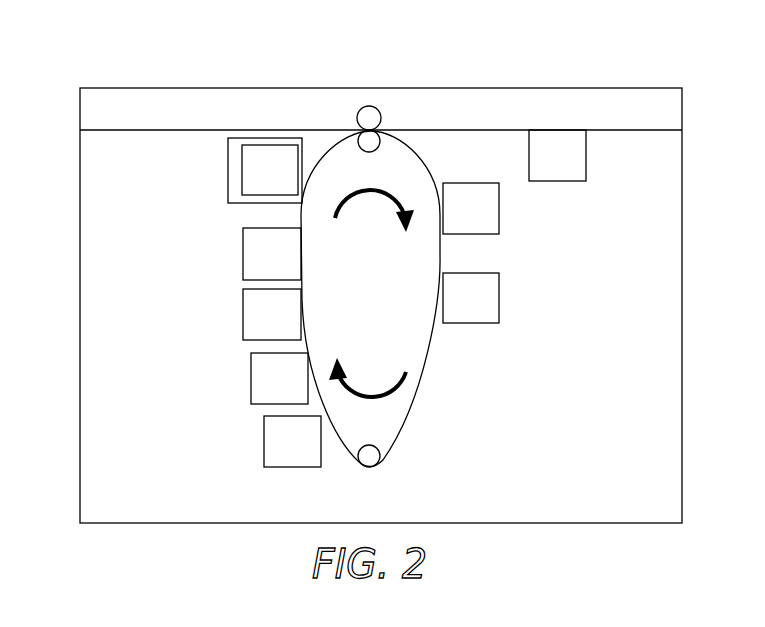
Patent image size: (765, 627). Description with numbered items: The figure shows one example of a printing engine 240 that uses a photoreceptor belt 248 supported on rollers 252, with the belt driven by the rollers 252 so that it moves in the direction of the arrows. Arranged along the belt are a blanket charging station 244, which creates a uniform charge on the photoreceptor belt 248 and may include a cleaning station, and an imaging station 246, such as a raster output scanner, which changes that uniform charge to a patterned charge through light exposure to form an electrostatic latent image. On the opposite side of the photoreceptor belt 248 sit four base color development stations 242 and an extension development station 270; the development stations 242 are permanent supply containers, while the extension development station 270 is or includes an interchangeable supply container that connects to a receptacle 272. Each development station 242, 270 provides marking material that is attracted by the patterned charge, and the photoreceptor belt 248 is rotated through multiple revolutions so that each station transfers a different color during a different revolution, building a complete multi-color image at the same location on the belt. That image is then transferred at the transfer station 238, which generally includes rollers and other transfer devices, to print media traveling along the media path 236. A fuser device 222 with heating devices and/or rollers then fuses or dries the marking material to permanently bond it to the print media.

The fuser device 222 is at (586, 160).
The media path 236 is at (166, 133).
The transfer station 238 is at (354, 124).
The printing engine 240 is at (80, 292).
The development stations 242 is at (243, 253).
The blanket charging station 244 is at (499, 210).
The imaging station 246 is at (499, 297).
The photoreceptor belt 248 is at (428, 372).
The rollers 252 is at (381, 146).
The extension development station 270 is at (286, 180).
The receptacle 272 is at (228, 170).